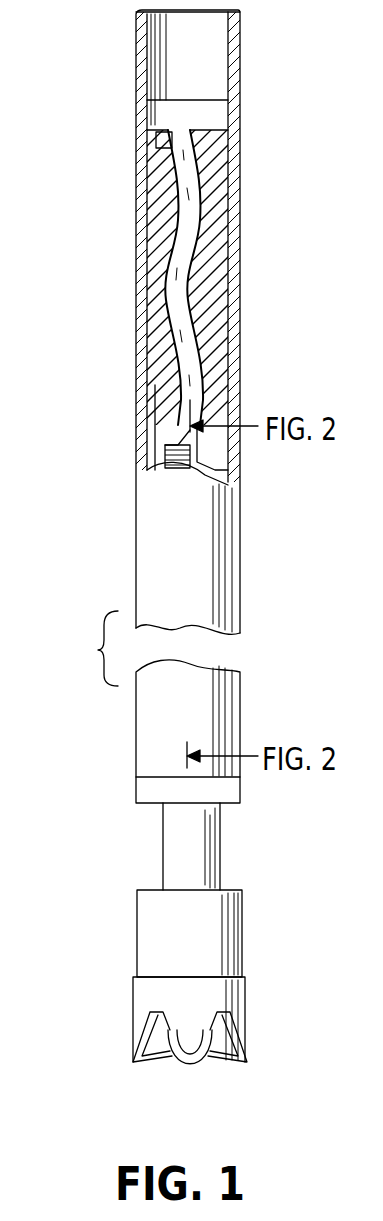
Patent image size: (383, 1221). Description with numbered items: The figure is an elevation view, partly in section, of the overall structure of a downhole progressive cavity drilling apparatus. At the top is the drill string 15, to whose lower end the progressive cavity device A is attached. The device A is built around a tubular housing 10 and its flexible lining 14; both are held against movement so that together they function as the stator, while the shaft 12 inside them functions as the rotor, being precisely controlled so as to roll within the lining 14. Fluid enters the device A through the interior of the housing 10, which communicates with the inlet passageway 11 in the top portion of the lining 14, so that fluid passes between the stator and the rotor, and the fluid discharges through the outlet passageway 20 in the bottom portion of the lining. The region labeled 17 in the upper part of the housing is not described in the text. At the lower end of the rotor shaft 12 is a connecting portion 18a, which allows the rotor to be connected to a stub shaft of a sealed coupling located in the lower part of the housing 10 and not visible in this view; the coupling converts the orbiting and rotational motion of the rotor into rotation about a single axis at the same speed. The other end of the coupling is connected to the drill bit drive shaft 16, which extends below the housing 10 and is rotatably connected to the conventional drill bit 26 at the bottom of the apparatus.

The housing 10 is at (137, 104).
The drill string 15 is at (136, 27).
The chamber 17 is at (208, 78).
The flexible lining 14 is at (215, 212).
The shaft 12 is at (170, 164).
The passageway 11 is at (200, 160).
The passageway 20 is at (207, 415).
The connecting portion 18a is at (167, 442).
The progressive cavity device A is at (121, 265).
The drill bit drive shaft 16 is at (222, 861).
The drill bit 26 is at (178, 1068).